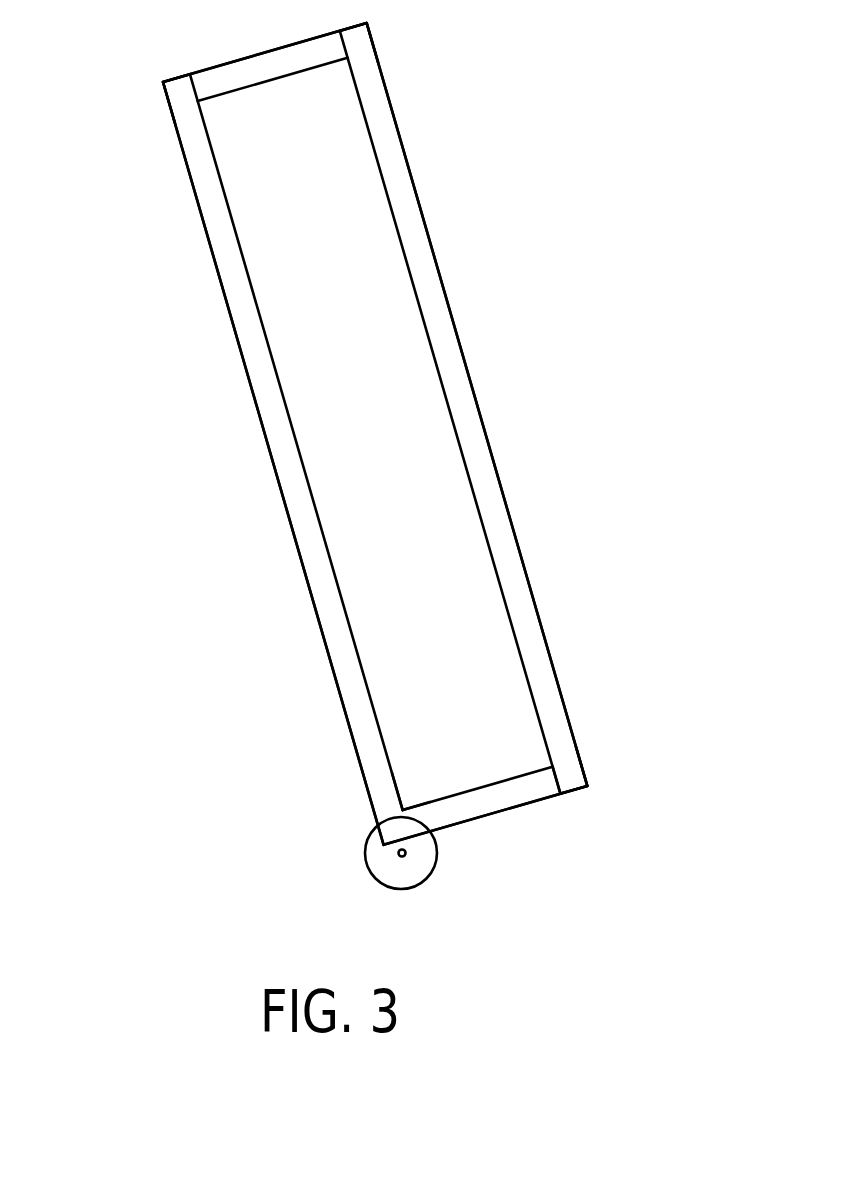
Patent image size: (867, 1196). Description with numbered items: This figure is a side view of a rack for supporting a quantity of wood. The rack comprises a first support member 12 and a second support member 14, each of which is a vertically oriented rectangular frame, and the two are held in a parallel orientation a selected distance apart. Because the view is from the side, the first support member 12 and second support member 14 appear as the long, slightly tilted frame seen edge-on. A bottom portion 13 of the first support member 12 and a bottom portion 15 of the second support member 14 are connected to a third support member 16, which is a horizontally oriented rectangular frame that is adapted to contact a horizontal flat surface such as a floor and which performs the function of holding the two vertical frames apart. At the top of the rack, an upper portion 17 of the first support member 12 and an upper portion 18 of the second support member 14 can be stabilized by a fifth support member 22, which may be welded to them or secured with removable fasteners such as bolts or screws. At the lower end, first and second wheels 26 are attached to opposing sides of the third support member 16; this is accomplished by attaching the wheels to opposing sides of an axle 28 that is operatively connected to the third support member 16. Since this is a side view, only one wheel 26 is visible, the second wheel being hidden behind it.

The first support member 12 is at (323, 573).
The bottom portion 13 is at (403, 812).
The second support member 14 is at (495, 512).
The bottom portion 15 is at (576, 770).
The third support member 16 is at (525, 788).
The upper portion 17 is at (187, 88).
The upper portion 18 is at (363, 44).
The fifth support member 22 is at (260, 72).
The wheel 26 is at (366, 850).
The axle 28 is at (410, 851).